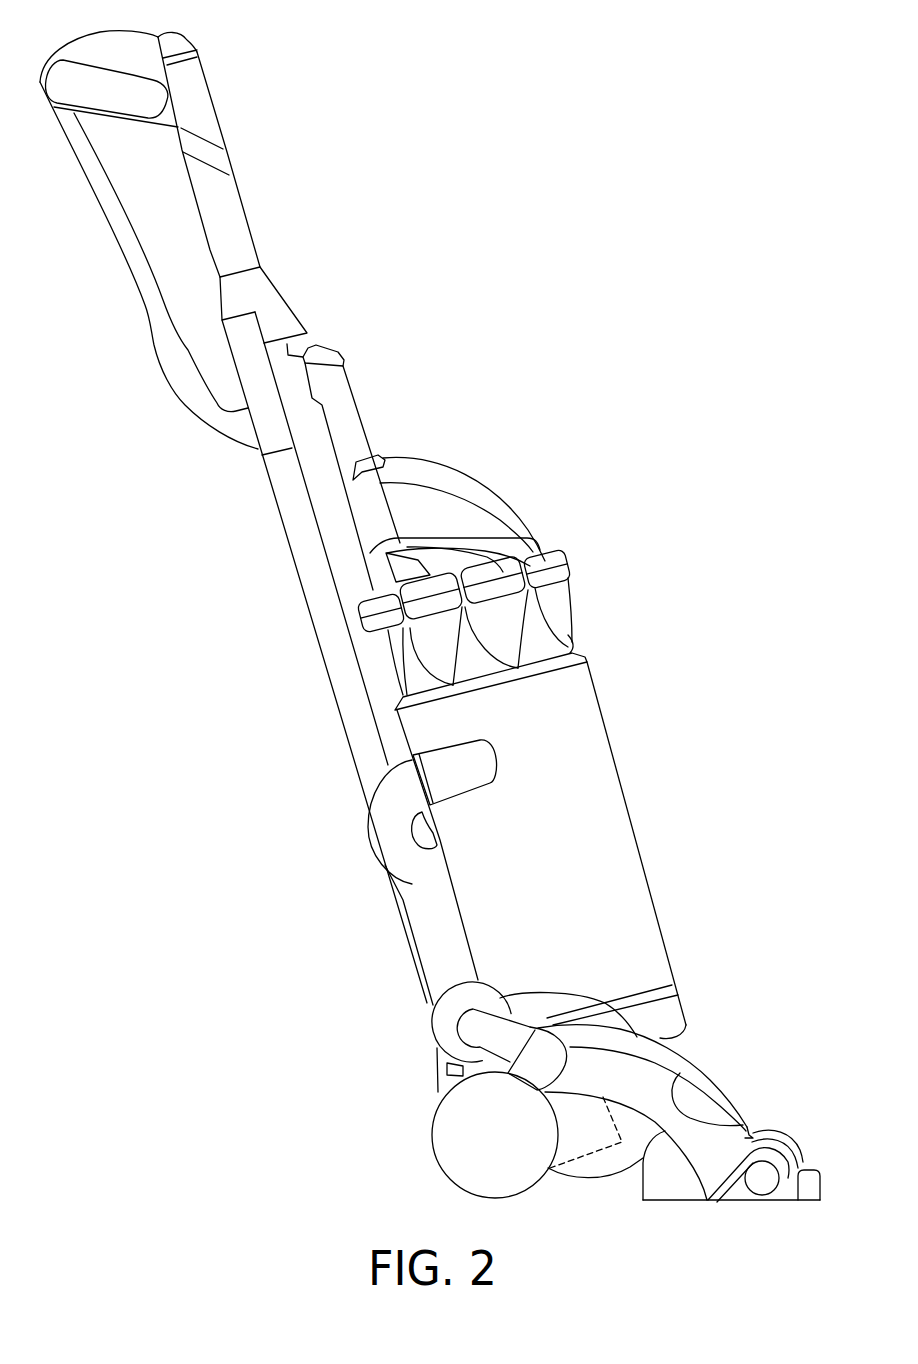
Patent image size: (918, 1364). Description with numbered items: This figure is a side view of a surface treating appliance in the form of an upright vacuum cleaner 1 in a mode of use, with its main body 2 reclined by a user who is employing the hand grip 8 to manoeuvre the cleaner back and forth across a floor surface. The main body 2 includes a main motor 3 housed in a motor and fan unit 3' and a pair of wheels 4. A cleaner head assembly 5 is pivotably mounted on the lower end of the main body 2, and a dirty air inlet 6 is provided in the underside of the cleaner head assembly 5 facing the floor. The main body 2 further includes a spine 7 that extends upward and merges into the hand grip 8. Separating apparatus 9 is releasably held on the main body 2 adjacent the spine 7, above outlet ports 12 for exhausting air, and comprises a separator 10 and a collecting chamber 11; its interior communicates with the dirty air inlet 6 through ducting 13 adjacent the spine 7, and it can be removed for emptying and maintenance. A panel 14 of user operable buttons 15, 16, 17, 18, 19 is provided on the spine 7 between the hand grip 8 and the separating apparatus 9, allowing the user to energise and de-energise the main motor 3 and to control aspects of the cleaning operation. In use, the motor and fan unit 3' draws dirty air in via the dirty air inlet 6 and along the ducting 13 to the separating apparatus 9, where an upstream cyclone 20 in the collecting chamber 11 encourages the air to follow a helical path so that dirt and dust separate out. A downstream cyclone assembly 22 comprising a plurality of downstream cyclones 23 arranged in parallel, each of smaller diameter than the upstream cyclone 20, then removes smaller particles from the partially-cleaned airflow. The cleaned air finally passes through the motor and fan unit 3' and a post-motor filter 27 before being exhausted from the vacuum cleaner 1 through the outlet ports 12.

The upright vacuum cleaner 1 is at (207, 490).
The main body 2 is at (684, 1027).
The motor and fan unit 3' is at (626, 1146).
The main motor 3 is at (626, 1146).
The wheels 4 is at (450, 1138).
The cleaner head assembly 5 is at (727, 1085).
The dirty air inlet 6 is at (757, 1203).
The spine 7 is at (313, 593).
The hand grip 8 is at (70, 46).
The separating apparatus 9 is at (705, 853).
The separator 10 is at (633, 822).
The collecting chamber 11 is at (658, 947).
The outlet ports 12 is at (672, 990).
The ducting 13 is at (391, 830).
The panel 14 is at (366, 328).
The user operable button 15 is at (366, 328).
The user operable button 16 is at (366, 328).
The user operable button 17 is at (366, 328).
The user operable button 18 is at (366, 328).
The user operable button 19 is at (320, 347).
The upstream cyclone 20 is at (583, 683).
The downstream cyclone assembly 22 is at (584, 605).
The downstream cyclones 23 is at (538, 557).
The post-motor filter 27 is at (500, 998).